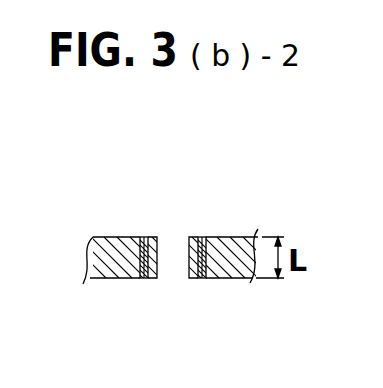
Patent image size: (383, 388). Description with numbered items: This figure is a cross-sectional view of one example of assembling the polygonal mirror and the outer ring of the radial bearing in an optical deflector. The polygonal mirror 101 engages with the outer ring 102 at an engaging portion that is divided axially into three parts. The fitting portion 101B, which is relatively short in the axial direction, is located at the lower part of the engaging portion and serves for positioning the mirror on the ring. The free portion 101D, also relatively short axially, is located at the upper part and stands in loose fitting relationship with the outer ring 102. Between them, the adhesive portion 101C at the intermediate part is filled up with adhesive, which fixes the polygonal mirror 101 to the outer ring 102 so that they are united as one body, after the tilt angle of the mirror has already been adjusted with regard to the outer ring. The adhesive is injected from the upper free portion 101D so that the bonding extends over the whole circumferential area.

The polygonal mirror 101 is at (103, 236).
The outer ring of the radial bearing 102 is at (149, 278).
The fitting portion 101B is at (205, 278).
The adhesive portion 101C is at (220, 246).
The free portion 101D is at (204, 250).